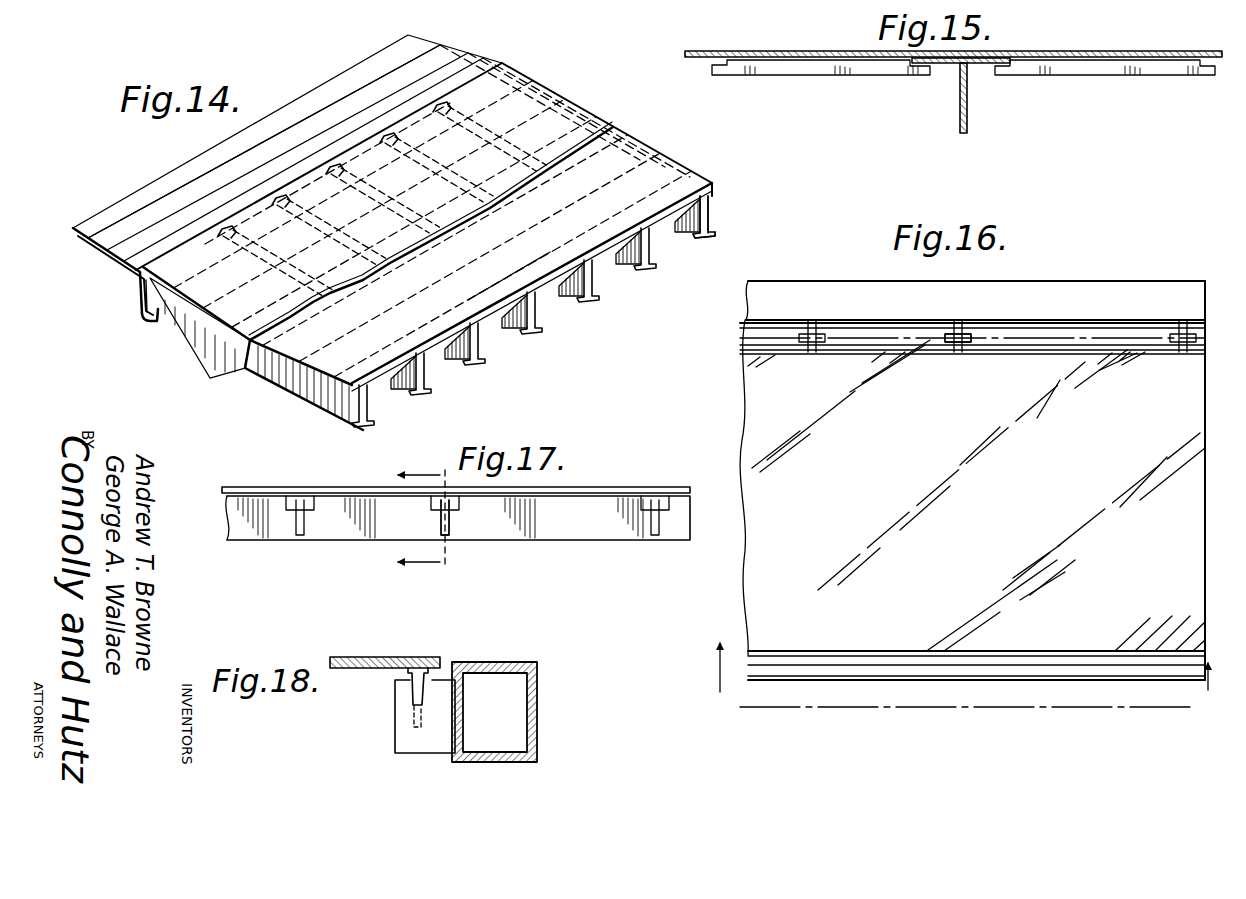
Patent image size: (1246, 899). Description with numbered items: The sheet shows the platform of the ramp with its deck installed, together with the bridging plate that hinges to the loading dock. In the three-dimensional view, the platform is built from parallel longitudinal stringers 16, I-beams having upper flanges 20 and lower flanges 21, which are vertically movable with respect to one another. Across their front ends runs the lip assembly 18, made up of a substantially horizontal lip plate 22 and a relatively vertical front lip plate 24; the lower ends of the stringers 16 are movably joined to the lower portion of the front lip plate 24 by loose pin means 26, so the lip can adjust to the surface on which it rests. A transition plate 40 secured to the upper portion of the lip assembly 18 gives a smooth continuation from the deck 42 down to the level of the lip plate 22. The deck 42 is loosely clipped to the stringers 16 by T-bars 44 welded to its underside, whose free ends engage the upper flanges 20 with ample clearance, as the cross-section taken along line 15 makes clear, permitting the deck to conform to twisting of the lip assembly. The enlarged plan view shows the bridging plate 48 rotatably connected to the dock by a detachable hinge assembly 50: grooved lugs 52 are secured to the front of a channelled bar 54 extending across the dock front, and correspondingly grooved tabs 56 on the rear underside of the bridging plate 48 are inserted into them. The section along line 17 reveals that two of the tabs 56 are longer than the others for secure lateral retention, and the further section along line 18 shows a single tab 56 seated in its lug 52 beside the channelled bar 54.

In FIG. 14, the section line 15— 15 is at (510, 269).
In FIG. 14, the stringers 16 is at (556, 296).
In FIG. 15, the stringers 16 is at (968, 78).
In FIG. 16, the section line 17— 17 is at (954, 681).
In FIG. 14, the lip assembly 18 is at (378, 36).
In FIG. 17, the lip assembly 18 is at (428, 521).
In FIG. 14, the upper flanges 20 is at (712, 189).
In FIG. 15, the upper flanges 20 is at (985, 63).
In FIG. 14, the lower flanges 21 is at (710, 230).
In FIG. 14, the lip plate 22 is at (230, 170).
In FIG. 14, the front lip plate 24 is at (140, 296).
In FIG. 14, the loose pin means 26 is at (155, 323).
In FIG. 14, the transition plate 40 is at (150, 236).
In FIG. 14, the deck 42 is at (650, 170).
In FIG. 15, the deck 42 is at (1080, 57).
In FIG. 14, the T-bars 44 is at (385, 204).
In FIG. 15, the T-bars 44 is at (793, 65).
In FIG. 16, the bridging plate 48 is at (748, 414).
In FIG. 17, the bridging plate 48 is at (615, 489).
In FIG. 18, the bridging plate 48 is at (400, 662).
In FIG. 18, the detachable hinge assembly 50 is at (443, 674).
In FIG. 16, the grooved lugs 52 is at (962, 325).
In FIG. 17, the grooved lugs 52 is at (300, 500).
In FIG. 18, the grooved lugs 52 is at (410, 738).
In FIG. 16, the channelled bar 54 is at (797, 300).
In FIG. 17, the channelled bar 54 is at (580, 520).
In FIG. 18, the channelled bar 54 is at (478, 664).
In FIG. 16, the grooved tabs 56 is at (948, 326).
In FIG. 17, the grooved tabs 56 is at (454, 507).
In FIG. 18, the grooved tabs 56 is at (410, 690).